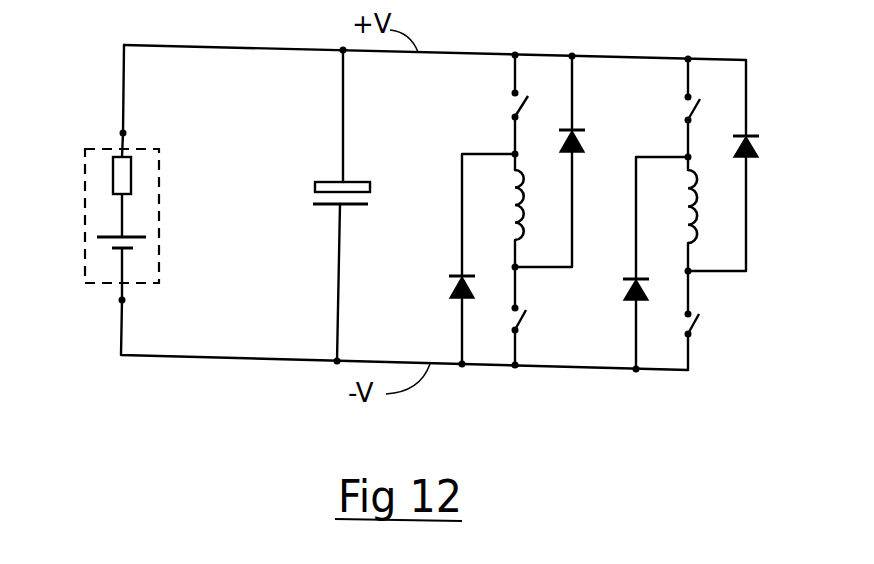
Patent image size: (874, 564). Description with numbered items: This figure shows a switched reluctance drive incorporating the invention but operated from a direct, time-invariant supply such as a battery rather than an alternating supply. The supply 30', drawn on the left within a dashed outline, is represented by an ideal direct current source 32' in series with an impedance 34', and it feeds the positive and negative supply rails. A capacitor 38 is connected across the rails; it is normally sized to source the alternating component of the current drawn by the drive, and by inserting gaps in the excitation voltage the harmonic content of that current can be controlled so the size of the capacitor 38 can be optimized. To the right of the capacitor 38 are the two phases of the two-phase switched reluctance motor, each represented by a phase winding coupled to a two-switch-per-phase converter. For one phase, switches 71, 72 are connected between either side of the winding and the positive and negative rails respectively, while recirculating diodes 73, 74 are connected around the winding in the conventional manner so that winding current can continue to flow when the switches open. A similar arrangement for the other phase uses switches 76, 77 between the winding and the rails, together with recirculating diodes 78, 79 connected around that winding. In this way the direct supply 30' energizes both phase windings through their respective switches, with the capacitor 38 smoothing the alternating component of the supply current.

The supply 30' is at (94, 230).
The ideal direct current source 32' is at (153, 287).
The impedance 34' is at (80, 185).
The capacitor 38 is at (320, 193).
The switch 71 is at (517, 108).
The switch 72 is at (526, 322).
The recirculating diode 73 is at (585, 130).
The recirculating diode 74 is at (452, 290).
The switch 76 is at (690, 110).
The switch 77 is at (700, 322).
The recirculating diode 78 is at (765, 138).
The recirculating diode 79 is at (626, 296).